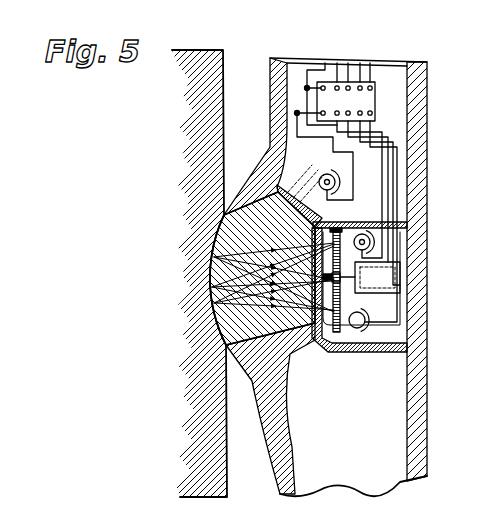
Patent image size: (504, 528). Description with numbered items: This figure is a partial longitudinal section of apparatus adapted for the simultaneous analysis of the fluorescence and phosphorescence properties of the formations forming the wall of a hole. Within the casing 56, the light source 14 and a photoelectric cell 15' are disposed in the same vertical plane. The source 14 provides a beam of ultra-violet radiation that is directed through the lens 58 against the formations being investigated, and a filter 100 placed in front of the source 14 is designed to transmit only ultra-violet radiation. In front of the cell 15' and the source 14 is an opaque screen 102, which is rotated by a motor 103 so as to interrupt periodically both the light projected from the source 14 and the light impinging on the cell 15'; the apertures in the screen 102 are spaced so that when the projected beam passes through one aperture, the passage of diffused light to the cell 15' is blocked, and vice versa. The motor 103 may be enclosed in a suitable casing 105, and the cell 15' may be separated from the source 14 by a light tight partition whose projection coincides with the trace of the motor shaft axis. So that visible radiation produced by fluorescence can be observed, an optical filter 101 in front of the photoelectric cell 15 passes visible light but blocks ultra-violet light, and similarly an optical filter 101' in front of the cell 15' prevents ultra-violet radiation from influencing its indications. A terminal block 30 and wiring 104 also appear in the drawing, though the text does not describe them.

The light source 14 is at (355, 327).
The photoelectric cell 15 is at (388, 156).
The photoelectric cell 15' is at (412, 225).
The terminal block 30 is at (375, 88).
The casing 56 is at (410, 107).
The lens 58 is at (230, 313).
The filter 100 is at (225, 349).
The optical filter 101 is at (227, 177).
The optical filter 101' is at (172, 280).
The opaque screen 102 is at (352, 221).
The motor 103 is at (375, 294).
The wiring 104 is at (414, 258).
The casing 105 is at (408, 284).